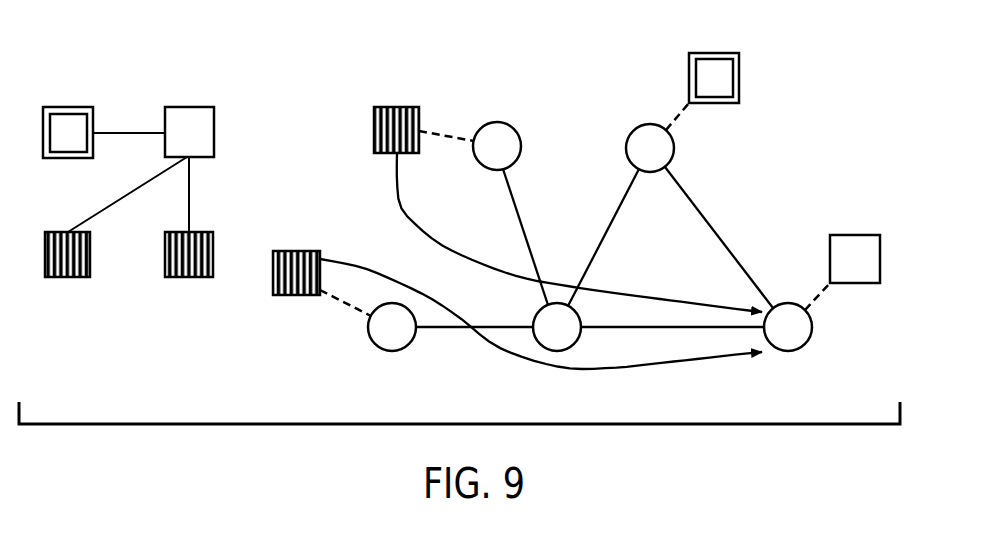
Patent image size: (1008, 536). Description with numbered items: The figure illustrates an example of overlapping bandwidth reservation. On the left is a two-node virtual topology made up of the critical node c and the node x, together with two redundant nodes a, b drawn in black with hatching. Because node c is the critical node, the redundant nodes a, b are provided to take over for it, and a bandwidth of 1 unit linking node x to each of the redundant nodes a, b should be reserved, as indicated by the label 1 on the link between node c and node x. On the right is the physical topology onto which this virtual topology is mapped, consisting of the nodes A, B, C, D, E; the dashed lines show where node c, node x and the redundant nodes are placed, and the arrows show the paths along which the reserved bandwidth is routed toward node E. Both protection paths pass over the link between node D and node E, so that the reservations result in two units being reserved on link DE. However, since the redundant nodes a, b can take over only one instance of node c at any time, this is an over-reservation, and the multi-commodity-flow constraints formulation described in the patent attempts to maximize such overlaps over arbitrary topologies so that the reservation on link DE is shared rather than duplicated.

The unit bandwidth reservation 1 is at (129, 120).
The leaf node a (striped) a is at (67, 269).
The leaf node b (striped) b is at (189, 269).
The critical node c is at (391, 105).
The node x is at (522, 195).
The node A is at (497, 146).
The node B is at (650, 148).
The node C is at (392, 327).
The node D is at (557, 327).
The node E is at (788, 327).